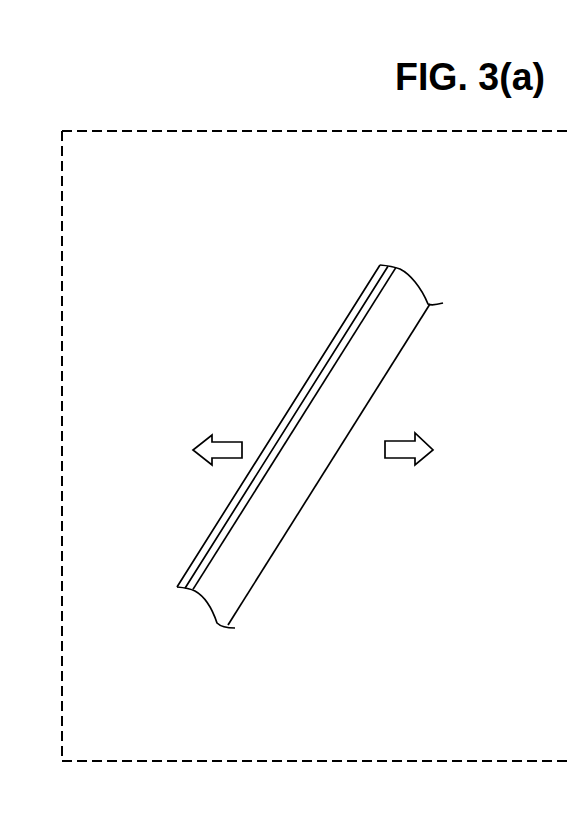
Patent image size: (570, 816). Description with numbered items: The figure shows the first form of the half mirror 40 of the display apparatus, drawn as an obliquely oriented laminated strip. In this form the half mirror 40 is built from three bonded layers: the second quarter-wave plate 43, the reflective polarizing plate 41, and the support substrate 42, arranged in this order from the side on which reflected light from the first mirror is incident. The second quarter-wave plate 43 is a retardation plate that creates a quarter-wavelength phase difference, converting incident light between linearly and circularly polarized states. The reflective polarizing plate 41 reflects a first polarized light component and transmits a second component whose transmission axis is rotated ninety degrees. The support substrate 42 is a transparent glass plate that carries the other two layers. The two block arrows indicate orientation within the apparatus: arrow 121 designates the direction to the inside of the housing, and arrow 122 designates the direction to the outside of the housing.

The half mirror 40 is at (443, 259).
The reflective polarizing plate 41 is at (190, 595).
The support substrate 42 is at (215, 623).
The second λ/4 plate 43 is at (177, 590).
The arrow 121 is at (225, 442).
The arrow 122 is at (403, 440).